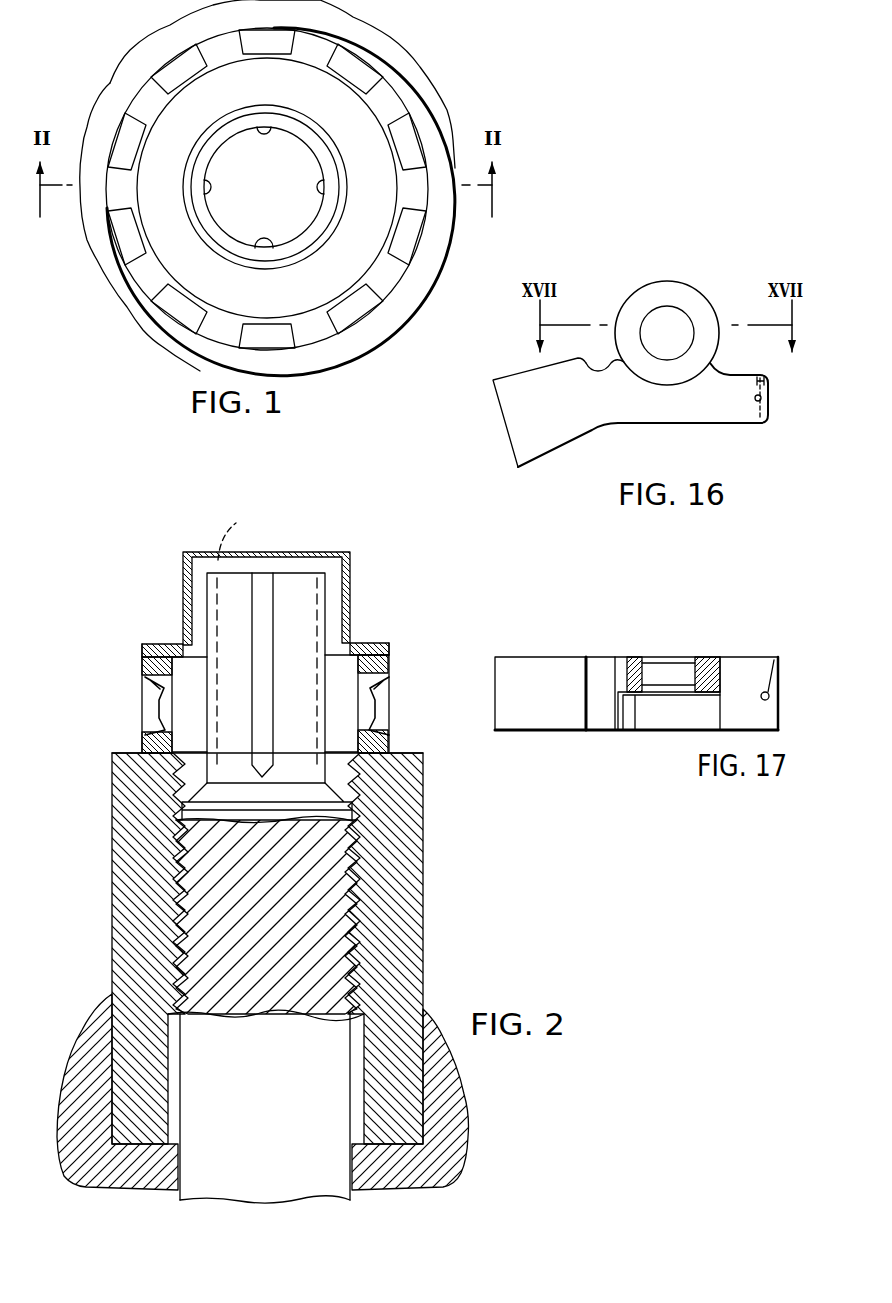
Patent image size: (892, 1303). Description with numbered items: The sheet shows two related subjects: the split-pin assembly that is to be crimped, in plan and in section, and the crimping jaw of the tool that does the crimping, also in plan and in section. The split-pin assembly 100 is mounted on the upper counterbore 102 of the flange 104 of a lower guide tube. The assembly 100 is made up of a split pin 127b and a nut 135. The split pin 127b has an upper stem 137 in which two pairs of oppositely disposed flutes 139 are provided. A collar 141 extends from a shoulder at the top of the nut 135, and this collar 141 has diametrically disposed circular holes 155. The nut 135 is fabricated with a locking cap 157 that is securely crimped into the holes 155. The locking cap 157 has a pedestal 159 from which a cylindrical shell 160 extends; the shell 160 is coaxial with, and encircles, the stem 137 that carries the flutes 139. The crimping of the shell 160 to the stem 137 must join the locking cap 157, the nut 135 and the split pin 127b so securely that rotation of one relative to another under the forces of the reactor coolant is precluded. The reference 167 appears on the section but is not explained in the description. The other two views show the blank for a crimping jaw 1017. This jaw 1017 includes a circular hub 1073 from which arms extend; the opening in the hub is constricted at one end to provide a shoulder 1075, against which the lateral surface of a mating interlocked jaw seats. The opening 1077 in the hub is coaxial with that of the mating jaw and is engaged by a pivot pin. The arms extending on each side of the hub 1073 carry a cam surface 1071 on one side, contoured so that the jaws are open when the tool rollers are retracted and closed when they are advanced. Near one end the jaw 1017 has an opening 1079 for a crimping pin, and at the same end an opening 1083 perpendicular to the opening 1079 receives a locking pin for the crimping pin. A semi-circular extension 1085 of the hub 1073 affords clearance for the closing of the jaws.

In FIG. 1, the split-pin assembly 100 is at (275, 194).
In FIG. 2, the split-pin assembly 100 is at (93, 826).
In FIG. 2, the upper counterbore 102 is at (172, 1128).
In FIG. 1, the flange 104 is at (410, 85).
In FIG. 2, the flange 104 is at (452, 1136).
In FIG. 1, the split pin 127b is at (242, 177).
In FIG. 2, the split pin 127b is at (292, 568).
In FIG. 1, the nut 135 is at (175, 332).
In FIG. 2, the nut 135 is at (427, 925).
In FIG. 1, the upper stem 137 is at (290, 158).
In FIG. 2, the upper stem 137 is at (292, 604).
In FIG. 1, the flutes 139 is at (266, 126).
In FIG. 2, the flutes 139 is at (263, 584).
In FIG. 2, the collar 141 is at (392, 647).
In FIG. 2, the circular holes 155 is at (148, 684).
In FIG. 1, the locking cap 157 is at (303, 85).
In FIG. 2, the locking cap 157 is at (359, 631).
In FIG. 1, the pedestal 159 is at (186, 248).
In FIG. 2, the pedestal 159 is at (168, 645).
In FIG. 1, the cylindrical shell 160 is at (336, 178).
In FIG. 2, the cylindrical shell 160 is at (184, 558).
In FIG. 2, the washer 167 is at (384, 632).
In FIG. 16, the jaw 1017 is at (644, 364).
In FIG. 17, the jaw 1017 is at (641, 701).
In FIG. 16, the cam surface 1071 is at (546, 462).
In FIG. 16, the circular hub 1073 is at (709, 299).
In FIG. 17, the circular hub 1073 is at (718, 672).
In FIG. 17, the shoulder 1075 is at (632, 712).
In FIG. 16, the opening 1077 is at (657, 312).
In FIG. 17, the opening 1077 is at (654, 676).
In FIG. 16, the opening 1079 is at (742, 437).
In FIG. 17, the opening 1079 is at (788, 636).
In FIG. 16, the opening 1083 is at (755, 401).
In FIG. 16, the semi-circular extension 1085 is at (596, 366).